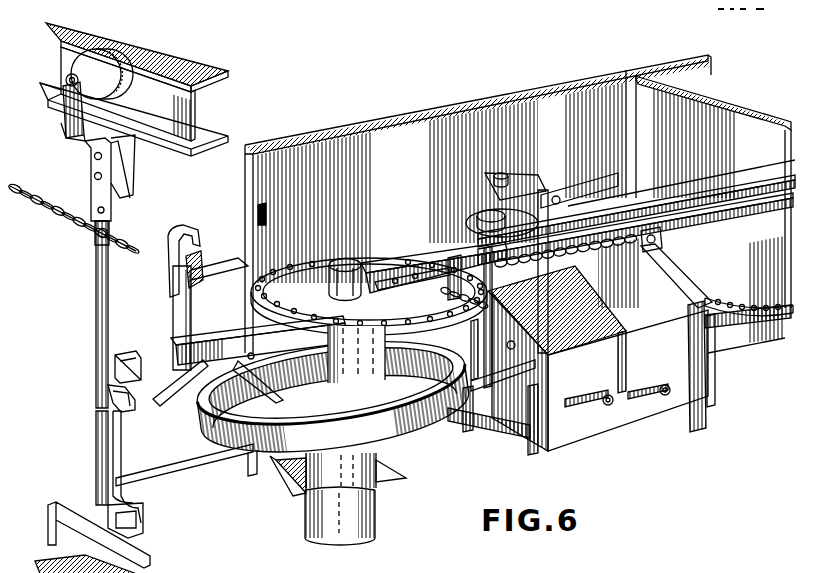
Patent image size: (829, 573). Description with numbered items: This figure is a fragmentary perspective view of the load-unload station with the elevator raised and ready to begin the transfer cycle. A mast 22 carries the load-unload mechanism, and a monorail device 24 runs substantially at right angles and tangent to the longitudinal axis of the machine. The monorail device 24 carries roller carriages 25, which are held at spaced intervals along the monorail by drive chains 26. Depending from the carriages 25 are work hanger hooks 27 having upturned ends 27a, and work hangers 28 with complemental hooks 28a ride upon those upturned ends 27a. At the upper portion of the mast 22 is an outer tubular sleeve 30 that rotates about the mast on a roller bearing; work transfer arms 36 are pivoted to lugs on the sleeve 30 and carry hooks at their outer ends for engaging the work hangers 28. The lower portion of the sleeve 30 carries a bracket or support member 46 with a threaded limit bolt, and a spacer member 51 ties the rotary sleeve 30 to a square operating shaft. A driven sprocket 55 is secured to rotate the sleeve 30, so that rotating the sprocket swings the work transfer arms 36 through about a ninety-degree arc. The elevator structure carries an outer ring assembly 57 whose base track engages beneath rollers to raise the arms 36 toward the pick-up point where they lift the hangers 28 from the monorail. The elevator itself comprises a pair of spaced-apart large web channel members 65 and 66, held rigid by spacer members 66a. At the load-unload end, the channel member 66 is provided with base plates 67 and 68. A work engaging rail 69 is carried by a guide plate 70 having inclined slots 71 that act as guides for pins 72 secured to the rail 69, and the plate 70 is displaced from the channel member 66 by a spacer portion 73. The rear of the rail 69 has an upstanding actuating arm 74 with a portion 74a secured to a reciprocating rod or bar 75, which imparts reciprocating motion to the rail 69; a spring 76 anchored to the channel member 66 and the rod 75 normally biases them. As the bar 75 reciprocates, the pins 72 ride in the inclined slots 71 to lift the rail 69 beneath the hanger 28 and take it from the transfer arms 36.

The mast 22 is at (362, 520).
The monorail device 24 is at (165, 48).
The roller carriage 25 is at (78, 150).
The drive chain 26 is at (48, 210).
The work hanger hook 27 is at (95, 293).
The upturned end 27a is at (108, 386).
The work hanger 28 is at (174, 303).
The complemental hook 28a is at (117, 350).
The outer tubular sleeve 30 is at (372, 478).
The work transfer arm 36 is at (222, 252).
The bracket or support member 46 is at (292, 482).
The spacer member 51 is at (406, 240).
The driven sprocket 55 is at (369, 296).
The outer ring assembly 57 is at (333, 397).
The web channel member 65 is at (500, 88).
The web channel member 66 is at (691, 294).
The spacer member 66a is at (733, 97).
The base plate 67 is at (700, 318).
The base plate 68 is at (489, 418).
The work engaging rail 69 is at (524, 428).
The guide plate 70 is at (618, 418).
The inclined slot 71 is at (586, 402).
The pin 72 is at (604, 392).
The spacer portion 73 is at (548, 348).
The upstanding actuating arm 74 is at (690, 318).
The portion of actuating arm 74a is at (682, 292).
The reciprocating rod or bar 75 is at (686, 222).
The spring 76 is at (542, 261).